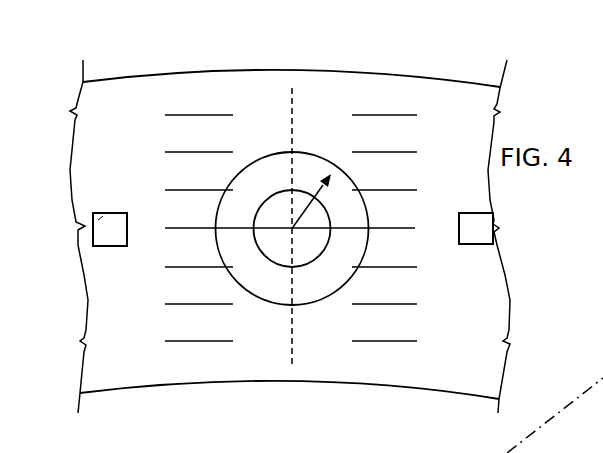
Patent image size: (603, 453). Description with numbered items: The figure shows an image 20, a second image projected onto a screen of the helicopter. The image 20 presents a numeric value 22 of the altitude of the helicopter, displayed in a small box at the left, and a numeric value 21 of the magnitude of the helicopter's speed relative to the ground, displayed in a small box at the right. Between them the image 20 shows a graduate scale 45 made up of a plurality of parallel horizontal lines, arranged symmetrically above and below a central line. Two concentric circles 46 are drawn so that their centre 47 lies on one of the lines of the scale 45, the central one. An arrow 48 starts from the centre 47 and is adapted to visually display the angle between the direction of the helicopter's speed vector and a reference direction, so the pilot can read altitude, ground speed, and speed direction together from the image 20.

The image 20 is at (414, 86).
The numeric value of the magnitude of speed 21 is at (470, 244).
The numeric value of the altitude 22 is at (104, 213).
The graduate scale 45 is at (194, 86).
The concentric circles 46 is at (258, 160).
The centre 47 is at (270, 303).
The arrow 48 is at (312, 188).